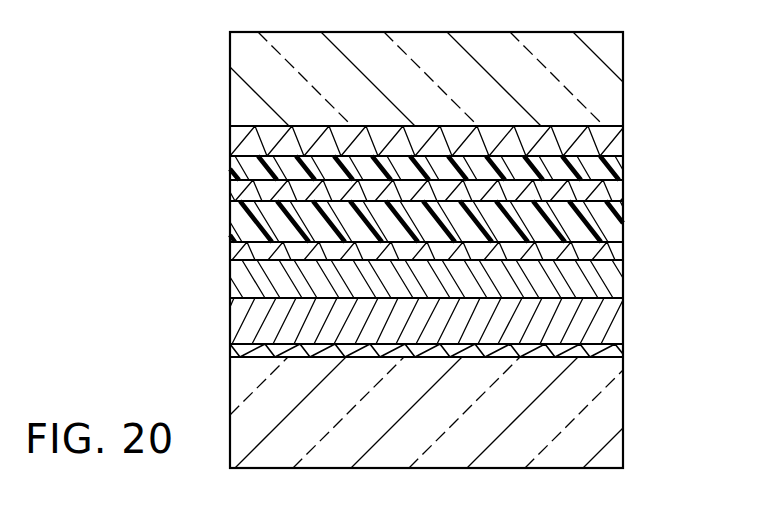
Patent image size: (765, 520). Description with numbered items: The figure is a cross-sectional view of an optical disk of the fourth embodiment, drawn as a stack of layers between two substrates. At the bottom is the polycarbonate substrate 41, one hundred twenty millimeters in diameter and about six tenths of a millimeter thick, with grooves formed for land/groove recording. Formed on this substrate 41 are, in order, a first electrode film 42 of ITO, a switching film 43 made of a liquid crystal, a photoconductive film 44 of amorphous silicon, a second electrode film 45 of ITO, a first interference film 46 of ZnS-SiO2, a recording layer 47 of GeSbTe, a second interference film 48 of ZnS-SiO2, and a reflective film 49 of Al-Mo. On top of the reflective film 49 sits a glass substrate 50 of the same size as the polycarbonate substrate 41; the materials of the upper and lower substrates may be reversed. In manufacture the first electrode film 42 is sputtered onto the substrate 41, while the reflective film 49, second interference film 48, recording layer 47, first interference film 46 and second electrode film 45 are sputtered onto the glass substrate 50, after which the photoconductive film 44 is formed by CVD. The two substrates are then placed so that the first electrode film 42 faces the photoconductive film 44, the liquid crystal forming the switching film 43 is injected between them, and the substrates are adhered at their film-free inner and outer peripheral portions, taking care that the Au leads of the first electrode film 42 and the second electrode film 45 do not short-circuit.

The substrate 41 is at (623, 402).
The first electrode film 42 is at (623, 350).
The switching film 43 is at (623, 313).
The photoconductive film 44 is at (623, 272).
The second electrode film 45 is at (623, 248).
The first interference film 46 is at (623, 228).
The recording layer 47 is at (623, 193).
The second interference film 48 is at (623, 172).
The reflective film 49 is at (623, 143).
The glass substrate 50 is at (623, 52).